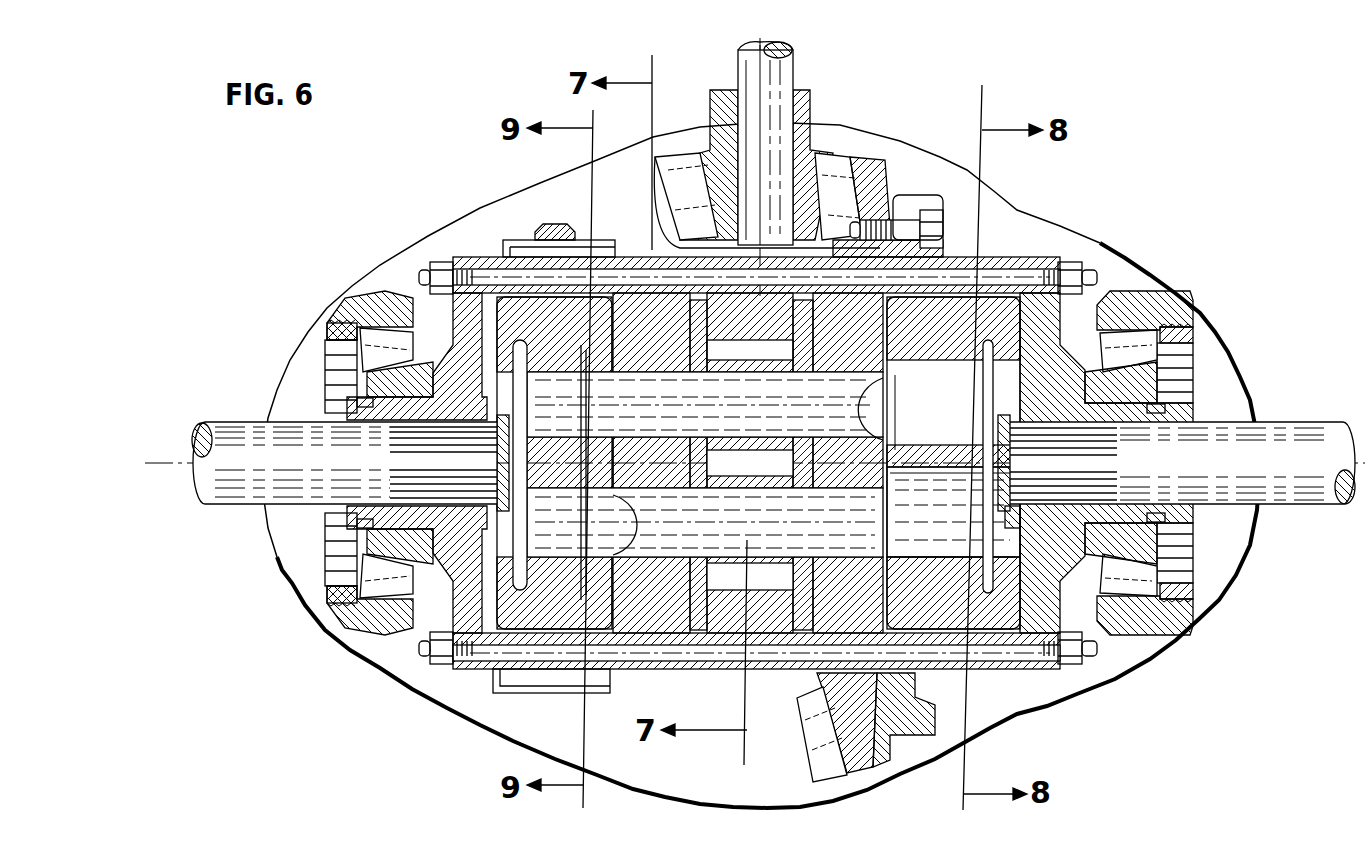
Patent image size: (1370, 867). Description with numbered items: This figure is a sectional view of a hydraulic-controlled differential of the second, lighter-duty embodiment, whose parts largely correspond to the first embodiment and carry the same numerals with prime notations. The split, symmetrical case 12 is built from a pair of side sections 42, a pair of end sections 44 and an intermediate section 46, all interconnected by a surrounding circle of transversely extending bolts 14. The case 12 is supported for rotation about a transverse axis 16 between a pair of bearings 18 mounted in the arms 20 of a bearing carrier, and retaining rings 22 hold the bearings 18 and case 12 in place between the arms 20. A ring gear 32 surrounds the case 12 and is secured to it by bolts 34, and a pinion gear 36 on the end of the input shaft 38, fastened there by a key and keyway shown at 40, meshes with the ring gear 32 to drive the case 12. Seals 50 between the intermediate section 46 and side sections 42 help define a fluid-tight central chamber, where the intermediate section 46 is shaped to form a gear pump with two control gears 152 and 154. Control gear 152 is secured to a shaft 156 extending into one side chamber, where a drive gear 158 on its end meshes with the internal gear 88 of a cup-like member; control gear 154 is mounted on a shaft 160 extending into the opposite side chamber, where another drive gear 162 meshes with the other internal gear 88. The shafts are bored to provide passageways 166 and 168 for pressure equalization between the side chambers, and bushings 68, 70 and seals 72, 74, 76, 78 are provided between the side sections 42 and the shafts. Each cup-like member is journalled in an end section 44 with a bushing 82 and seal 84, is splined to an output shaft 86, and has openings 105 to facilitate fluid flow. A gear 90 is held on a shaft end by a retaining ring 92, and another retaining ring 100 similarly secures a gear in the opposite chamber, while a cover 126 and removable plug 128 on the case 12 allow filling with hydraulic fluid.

The case 12 is at (1003, 225).
The bolts 14 is at (1067, 262).
The transverse axis 16 is at (1313, 467).
The bearings 18 is at (326, 357).
The arms 20 is at (363, 307).
The retaining rings 22 is at (327, 330).
The ring gear 32 is at (843, 158).
The bolts 34 is at (933, 238).
The pinion gear 36 is at (813, 113).
The input shaft 38 is at (785, 70).
The pinion shaft 40 is at (755, 73).
The side sections 42 is at (650, 673).
The end sections 44 is at (463, 313).
The intermediate section 46 is at (757, 333).
The seals 50 is at (790, 628).
The bushing 68 is at (668, 465).
The bushing 70 is at (832, 360).
The seal 72 is at (632, 360).
The seal 74 is at (688, 467).
The seal 76 is at (807, 467).
The seal 78 is at (873, 366).
The bushing 82 is at (357, 388).
The seal 84 is at (357, 403).
The output shaft 86 is at (233, 490).
The internal gear 88 is at (905, 367).
The gear 90 is at (907, 565).
The retaining ring 92 is at (1012, 570).
The retaining ring 100 is at (520, 340).
The openings 105 is at (990, 367).
The cover 126 is at (510, 240).
The removable plug 128 is at (580, 237).
The control gear 152 is at (757, 355).
The control gear 154 is at (760, 580).
The shaft 156 is at (757, 438).
The drive gear 158 is at (617, 381).
The shaft 160 is at (760, 510).
The drive gear 162 is at (907, 513).
The passageway 166 is at (685, 420).
The passageway 168 is at (680, 508).